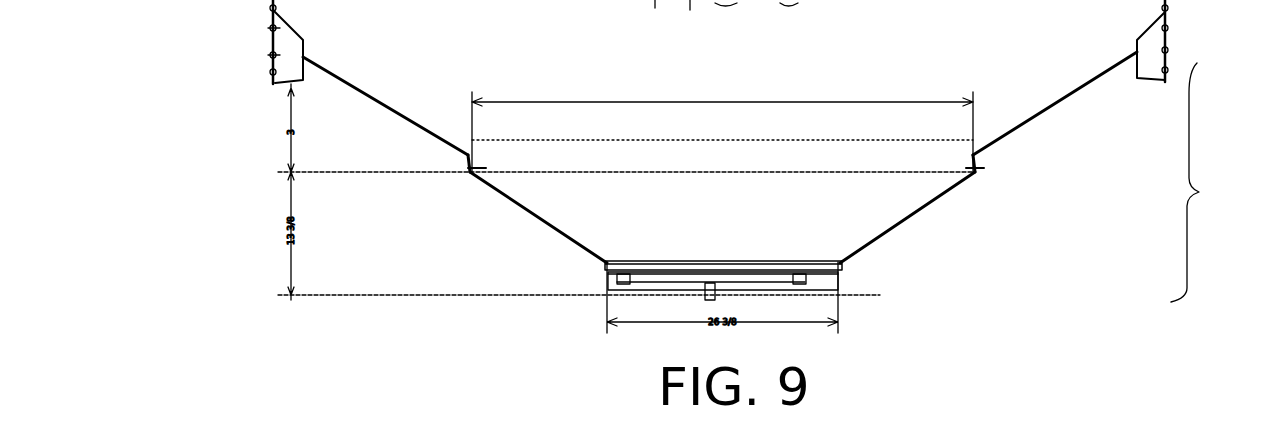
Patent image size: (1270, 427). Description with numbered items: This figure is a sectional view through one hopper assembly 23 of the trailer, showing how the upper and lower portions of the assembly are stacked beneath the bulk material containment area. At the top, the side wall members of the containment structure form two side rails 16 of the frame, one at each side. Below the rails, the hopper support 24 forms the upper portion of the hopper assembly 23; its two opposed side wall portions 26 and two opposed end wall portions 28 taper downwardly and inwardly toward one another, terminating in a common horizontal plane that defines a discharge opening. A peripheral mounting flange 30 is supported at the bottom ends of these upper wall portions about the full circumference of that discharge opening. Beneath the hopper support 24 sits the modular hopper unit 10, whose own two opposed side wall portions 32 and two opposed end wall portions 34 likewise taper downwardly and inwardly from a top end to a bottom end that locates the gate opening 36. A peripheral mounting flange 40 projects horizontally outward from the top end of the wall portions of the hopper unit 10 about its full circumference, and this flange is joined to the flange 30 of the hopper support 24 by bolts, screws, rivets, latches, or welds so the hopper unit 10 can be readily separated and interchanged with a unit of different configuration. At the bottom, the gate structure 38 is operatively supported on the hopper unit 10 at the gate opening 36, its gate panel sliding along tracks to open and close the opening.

The modular hopper unit 10 is at (410, 245).
The side rail 16 is at (290, 40).
The hopper assembly 23 is at (1210, 182).
The hopper support 24 is at (643, 163).
The side wall portion of hopper support 26 is at (385, 108).
The end wall portion of hopper support 28 is at (800, 94).
The peripheral mounting flange of hopper support 30 is at (986, 166).
The side wall portion of hopper unit 32 is at (538, 225).
The end wall portion of hopper unit 34 is at (765, 256).
The gate opening 36 is at (791, 243).
The gate structure 38 is at (760, 277).
The peripheral mounting flange of hopper unit 40 is at (990, 176).